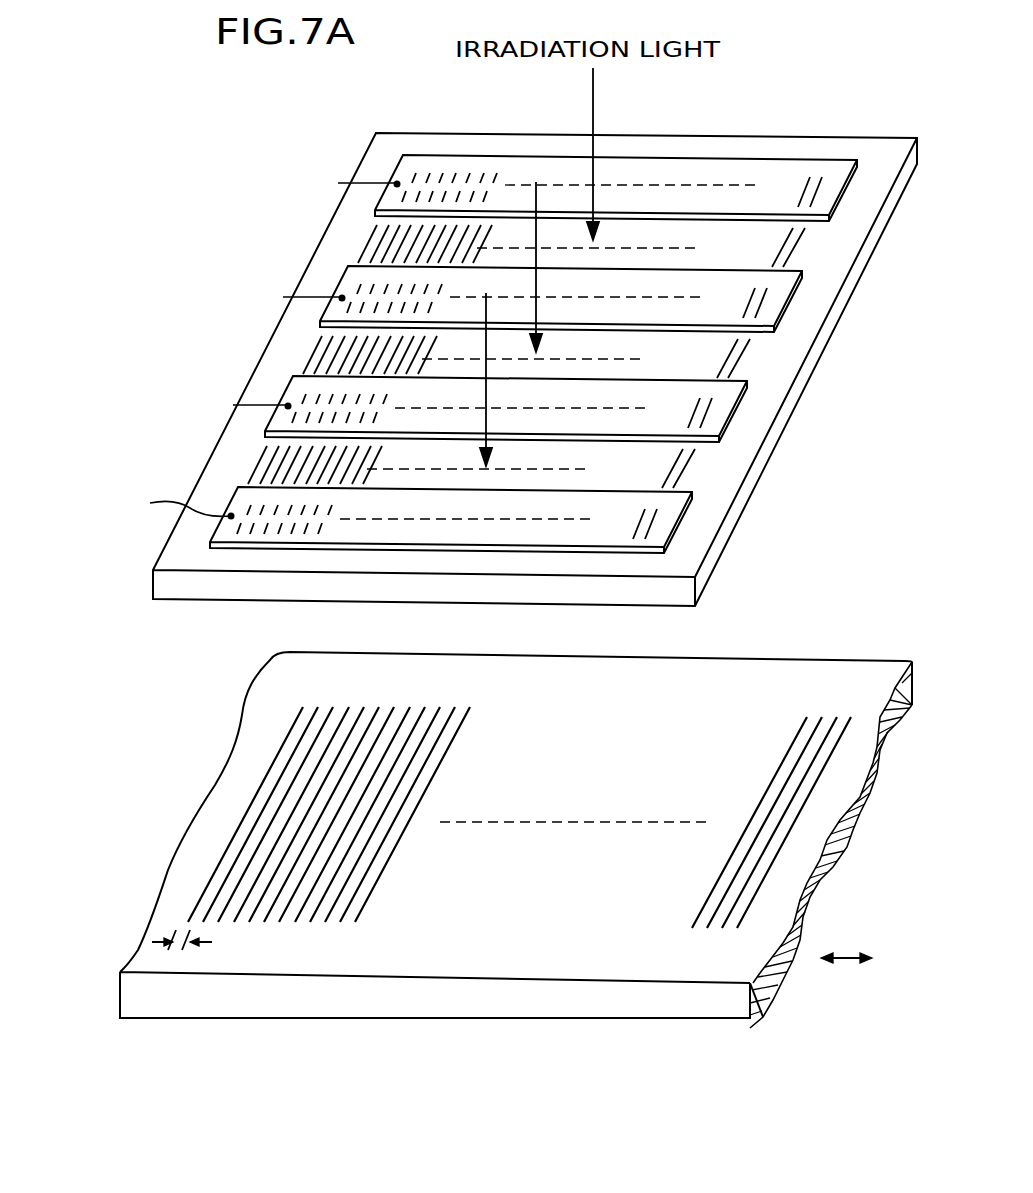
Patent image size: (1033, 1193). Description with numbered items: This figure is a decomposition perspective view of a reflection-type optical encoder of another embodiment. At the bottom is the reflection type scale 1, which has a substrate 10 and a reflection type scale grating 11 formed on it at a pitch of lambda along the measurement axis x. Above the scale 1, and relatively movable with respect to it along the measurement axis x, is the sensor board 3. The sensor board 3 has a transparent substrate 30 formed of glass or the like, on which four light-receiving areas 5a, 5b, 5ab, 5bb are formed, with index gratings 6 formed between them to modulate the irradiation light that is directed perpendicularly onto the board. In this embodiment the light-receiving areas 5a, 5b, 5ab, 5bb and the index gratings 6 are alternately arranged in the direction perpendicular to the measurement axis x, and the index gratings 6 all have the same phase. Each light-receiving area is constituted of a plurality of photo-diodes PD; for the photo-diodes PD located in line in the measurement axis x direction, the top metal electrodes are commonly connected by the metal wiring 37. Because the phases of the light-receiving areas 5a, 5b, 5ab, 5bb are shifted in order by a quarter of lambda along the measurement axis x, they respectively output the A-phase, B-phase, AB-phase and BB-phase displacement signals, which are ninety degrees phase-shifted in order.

The reflection type scale 1 is at (551, 998).
The sensor board 3 is at (727, 131).
The light-receiving area 5a is at (829, 178).
The light-receiving area 5b is at (772, 292).
The light-receiving area 5ab is at (716, 403).
The light-receiving area 5bb is at (668, 510).
The index grating 6 is at (360, 228).
The substrate 10 is at (683, 1005).
The reflection type scale grating 11 is at (373, 888).
The transparent substrate 30 is at (800, 374).
The metal wiring 37 is at (798, 175).
The photo-diode PD is at (424, 168).